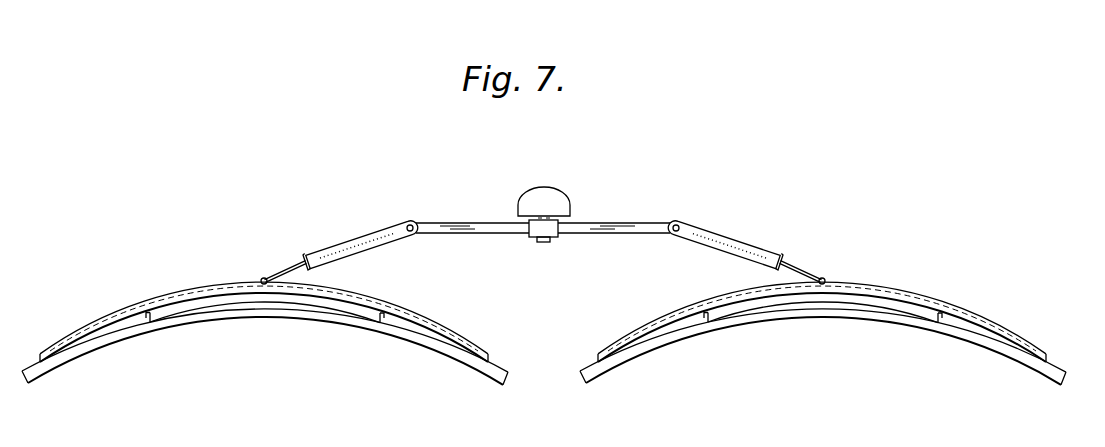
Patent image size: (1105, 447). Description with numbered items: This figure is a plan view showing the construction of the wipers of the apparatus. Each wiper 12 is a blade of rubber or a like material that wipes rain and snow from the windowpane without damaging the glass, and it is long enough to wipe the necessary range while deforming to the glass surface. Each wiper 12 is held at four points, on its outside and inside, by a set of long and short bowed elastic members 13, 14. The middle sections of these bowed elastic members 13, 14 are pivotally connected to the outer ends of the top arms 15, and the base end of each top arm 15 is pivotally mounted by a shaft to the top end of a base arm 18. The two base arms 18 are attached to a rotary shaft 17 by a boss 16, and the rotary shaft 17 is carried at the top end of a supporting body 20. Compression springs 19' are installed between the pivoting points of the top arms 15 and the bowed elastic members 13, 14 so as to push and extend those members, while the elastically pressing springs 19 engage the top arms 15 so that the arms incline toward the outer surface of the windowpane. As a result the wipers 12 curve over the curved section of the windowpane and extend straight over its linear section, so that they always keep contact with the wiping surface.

The wiper 12 is at (267, 325).
The long bowed elastic member 13 is at (97, 322).
The short bowed elastic member 14 is at (162, 312).
The top arm 15 is at (327, 257).
The boss 16 is at (552, 232).
The rotary shaft 17 is at (542, 240).
The base arm 18 is at (472, 226).
The compression spring 19 is at (556, 209).
The compression spring 19' is at (560, 251).
The supporting body 20 is at (540, 200).